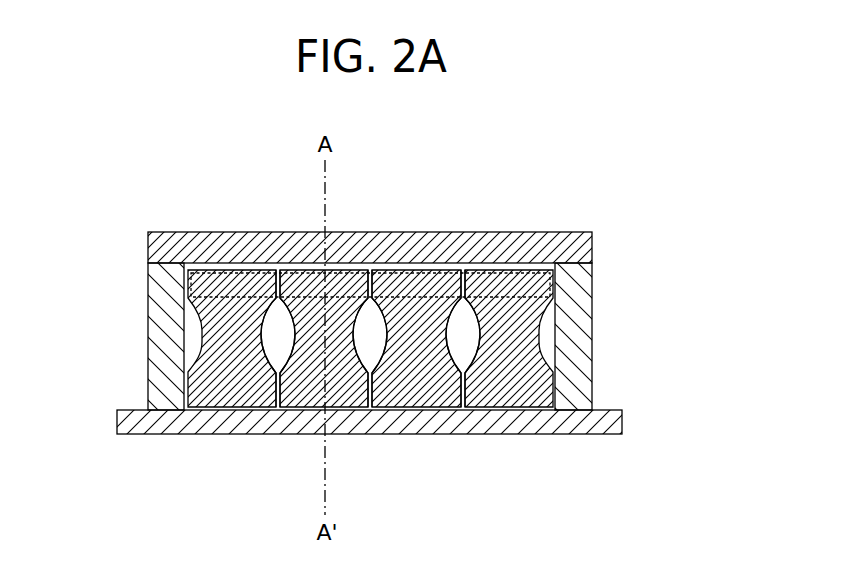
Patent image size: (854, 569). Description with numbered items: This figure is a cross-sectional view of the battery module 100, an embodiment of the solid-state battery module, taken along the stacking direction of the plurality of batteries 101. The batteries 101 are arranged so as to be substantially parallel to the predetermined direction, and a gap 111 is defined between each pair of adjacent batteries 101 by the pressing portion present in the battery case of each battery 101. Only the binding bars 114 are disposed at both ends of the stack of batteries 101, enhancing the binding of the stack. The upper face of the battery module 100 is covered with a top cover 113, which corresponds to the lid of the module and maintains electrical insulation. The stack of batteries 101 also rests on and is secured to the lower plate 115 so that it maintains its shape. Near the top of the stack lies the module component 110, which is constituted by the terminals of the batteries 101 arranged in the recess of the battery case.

The battery module 100 is at (702, 158).
The battery 101 is at (226, 398).
The module component 110 is at (417, 282).
The gap 111 is at (278, 338).
The top cover 113 is at (488, 233).
The binding bar 114 is at (161, 311).
The lower plate 115 is at (600, 412).